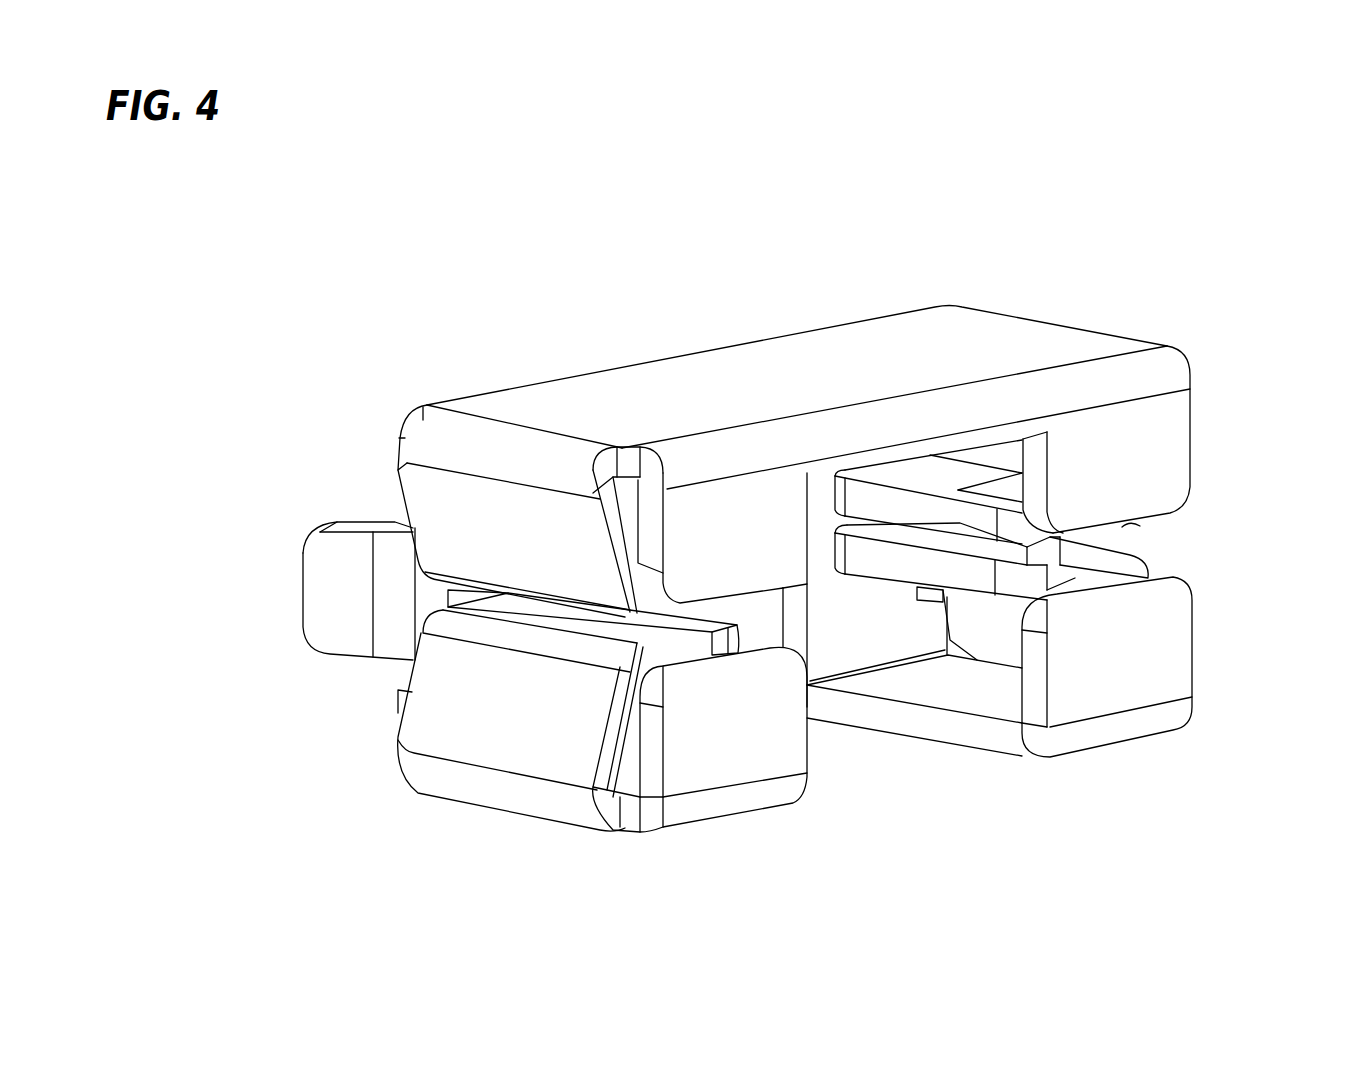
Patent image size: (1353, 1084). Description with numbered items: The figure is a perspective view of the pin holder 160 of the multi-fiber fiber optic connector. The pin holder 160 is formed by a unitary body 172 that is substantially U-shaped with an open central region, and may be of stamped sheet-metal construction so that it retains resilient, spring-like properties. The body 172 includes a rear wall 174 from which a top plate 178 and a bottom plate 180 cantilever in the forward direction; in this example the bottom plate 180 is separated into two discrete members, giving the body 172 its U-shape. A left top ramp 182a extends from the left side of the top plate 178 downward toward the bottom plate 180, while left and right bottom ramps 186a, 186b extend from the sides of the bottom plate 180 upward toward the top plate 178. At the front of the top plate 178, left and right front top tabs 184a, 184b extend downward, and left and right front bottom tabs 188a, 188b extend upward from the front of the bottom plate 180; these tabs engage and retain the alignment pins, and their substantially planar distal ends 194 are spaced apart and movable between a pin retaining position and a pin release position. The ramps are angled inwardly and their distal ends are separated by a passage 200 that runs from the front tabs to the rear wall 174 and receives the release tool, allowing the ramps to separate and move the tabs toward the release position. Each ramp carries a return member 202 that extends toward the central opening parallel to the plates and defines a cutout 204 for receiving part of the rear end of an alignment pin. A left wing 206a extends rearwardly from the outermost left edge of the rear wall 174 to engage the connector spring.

The pin holder 160 is at (413, 250).
The body 172 is at (1018, 313).
The rear wall 174 is at (396, 442).
The top plate 178 is at (855, 340).
The bottom plate 180 is at (940, 740).
The left top ramp 182a is at (452, 522).
The left front top tab 184a is at (733, 543).
The right front top tab 184b is at (1150, 445).
The left bottom ramp 186a is at (482, 733).
The right bottom ramp 186b is at (1150, 560).
The left front bottom tab 188a is at (727, 760).
The right front bottom tab 188b is at (1158, 657).
The distal ends 194 is at (1180, 510).
The passage 200 is at (517, 620).
The return member 202 is at (890, 585).
The cutout 204 is at (1077, 590).
The left wing 206a is at (303, 607).